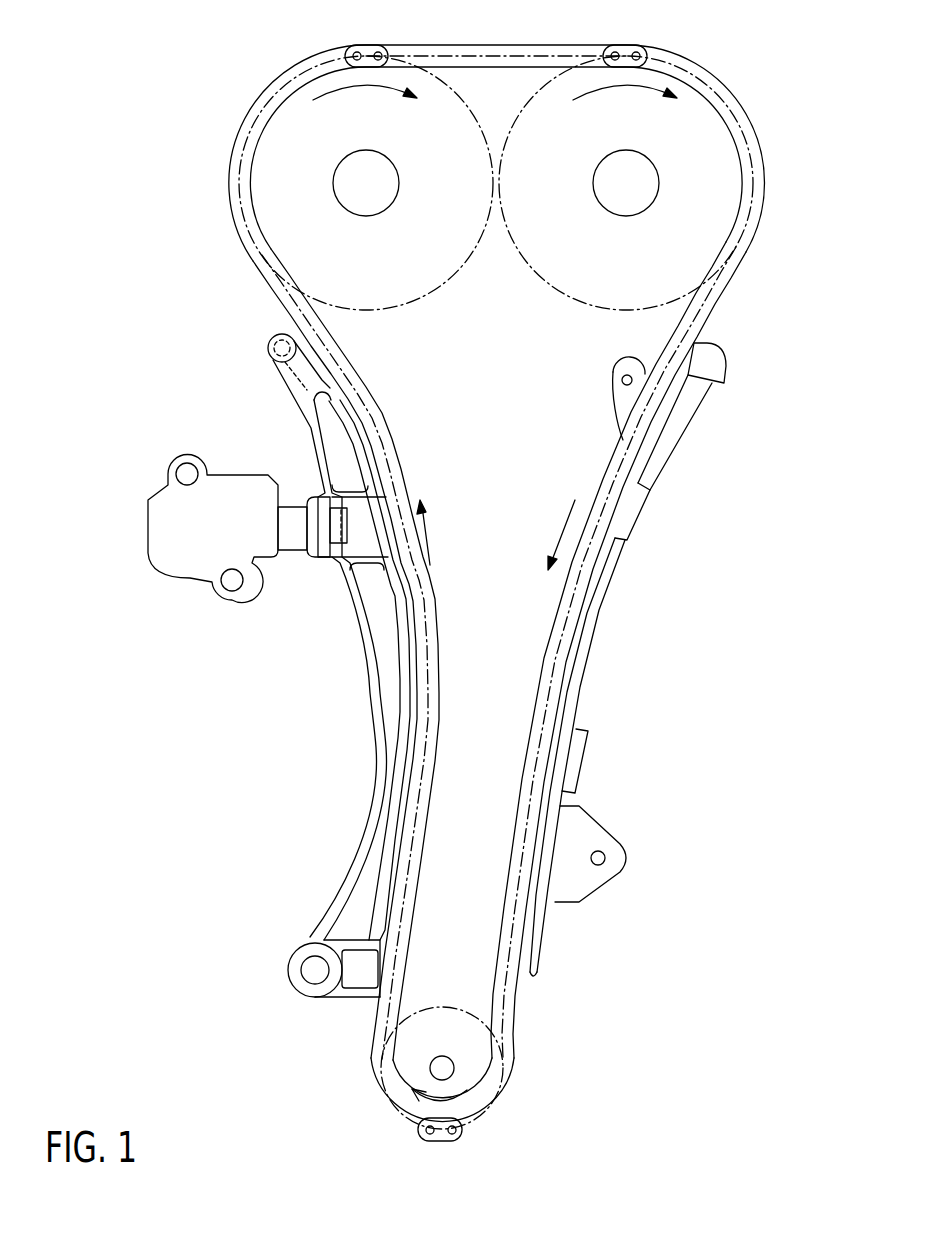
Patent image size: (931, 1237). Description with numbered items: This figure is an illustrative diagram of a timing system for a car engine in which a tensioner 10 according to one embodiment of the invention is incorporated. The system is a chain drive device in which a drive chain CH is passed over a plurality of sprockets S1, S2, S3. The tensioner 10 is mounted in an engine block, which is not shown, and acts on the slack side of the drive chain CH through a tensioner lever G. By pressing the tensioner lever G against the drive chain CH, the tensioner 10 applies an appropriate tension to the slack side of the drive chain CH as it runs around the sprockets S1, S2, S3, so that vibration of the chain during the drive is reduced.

The drive chain CH is at (697, 313).
The sprocket S1 is at (475, 1066).
The sprocket S2 is at (282, 176).
The sprocket S3 is at (693, 167).
The tensioner lever G is at (380, 862).
The tensioner 10 is at (196, 537).